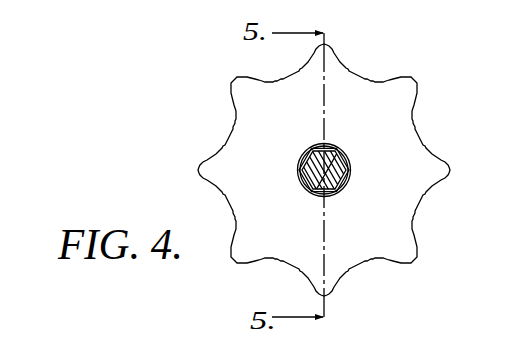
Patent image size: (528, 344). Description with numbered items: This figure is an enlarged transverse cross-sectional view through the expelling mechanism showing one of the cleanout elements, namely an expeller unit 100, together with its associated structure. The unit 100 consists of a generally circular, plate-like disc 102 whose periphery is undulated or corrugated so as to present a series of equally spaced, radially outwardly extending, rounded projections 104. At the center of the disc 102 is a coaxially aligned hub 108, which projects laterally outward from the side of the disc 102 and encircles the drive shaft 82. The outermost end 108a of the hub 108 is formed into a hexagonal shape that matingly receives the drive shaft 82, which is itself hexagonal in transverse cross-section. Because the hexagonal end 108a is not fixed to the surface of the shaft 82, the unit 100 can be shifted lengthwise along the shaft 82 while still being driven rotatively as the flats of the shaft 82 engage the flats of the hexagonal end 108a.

The expeller unit 100 is at (365, 65).
The disc 102 is at (253, 158).
The rounded projection 104 is at (403, 256).
The hub 108 is at (298, 160).
The drive shaft 82 is at (344, 153).
The hexagonal end of hub 108a is at (351, 178).